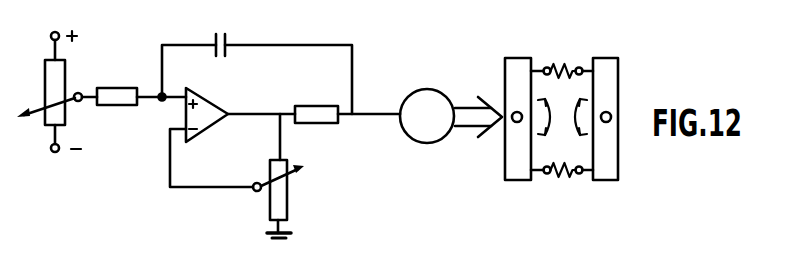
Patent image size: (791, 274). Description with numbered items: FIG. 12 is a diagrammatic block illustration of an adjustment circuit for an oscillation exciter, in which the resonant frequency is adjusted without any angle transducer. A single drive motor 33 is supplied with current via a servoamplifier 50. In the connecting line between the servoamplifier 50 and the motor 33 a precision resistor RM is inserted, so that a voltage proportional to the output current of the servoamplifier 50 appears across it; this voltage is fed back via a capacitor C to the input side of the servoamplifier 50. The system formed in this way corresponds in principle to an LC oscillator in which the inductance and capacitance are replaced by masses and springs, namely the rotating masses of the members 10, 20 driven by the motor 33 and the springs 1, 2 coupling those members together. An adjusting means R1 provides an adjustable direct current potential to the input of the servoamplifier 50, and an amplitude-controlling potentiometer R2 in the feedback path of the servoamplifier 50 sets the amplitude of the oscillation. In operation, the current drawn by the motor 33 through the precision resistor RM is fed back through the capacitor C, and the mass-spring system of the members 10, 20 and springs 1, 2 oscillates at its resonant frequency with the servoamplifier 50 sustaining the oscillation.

The spring (upper) 1 is at (561, 62).
The spring (lower) 2 is at (558, 184).
The first disc 10 is at (496, 72).
The second disc 20 is at (626, 75).
The drive motor 33 is at (426, 99).
The servoamplifier 50 is at (209, 113).
The adjusting means R1 is at (55, 91).
The amplitude-controlling potentiometer R2 is at (284, 176).
The precision resistor RM is at (347, 100).
The capacitor C is at (257, 74).